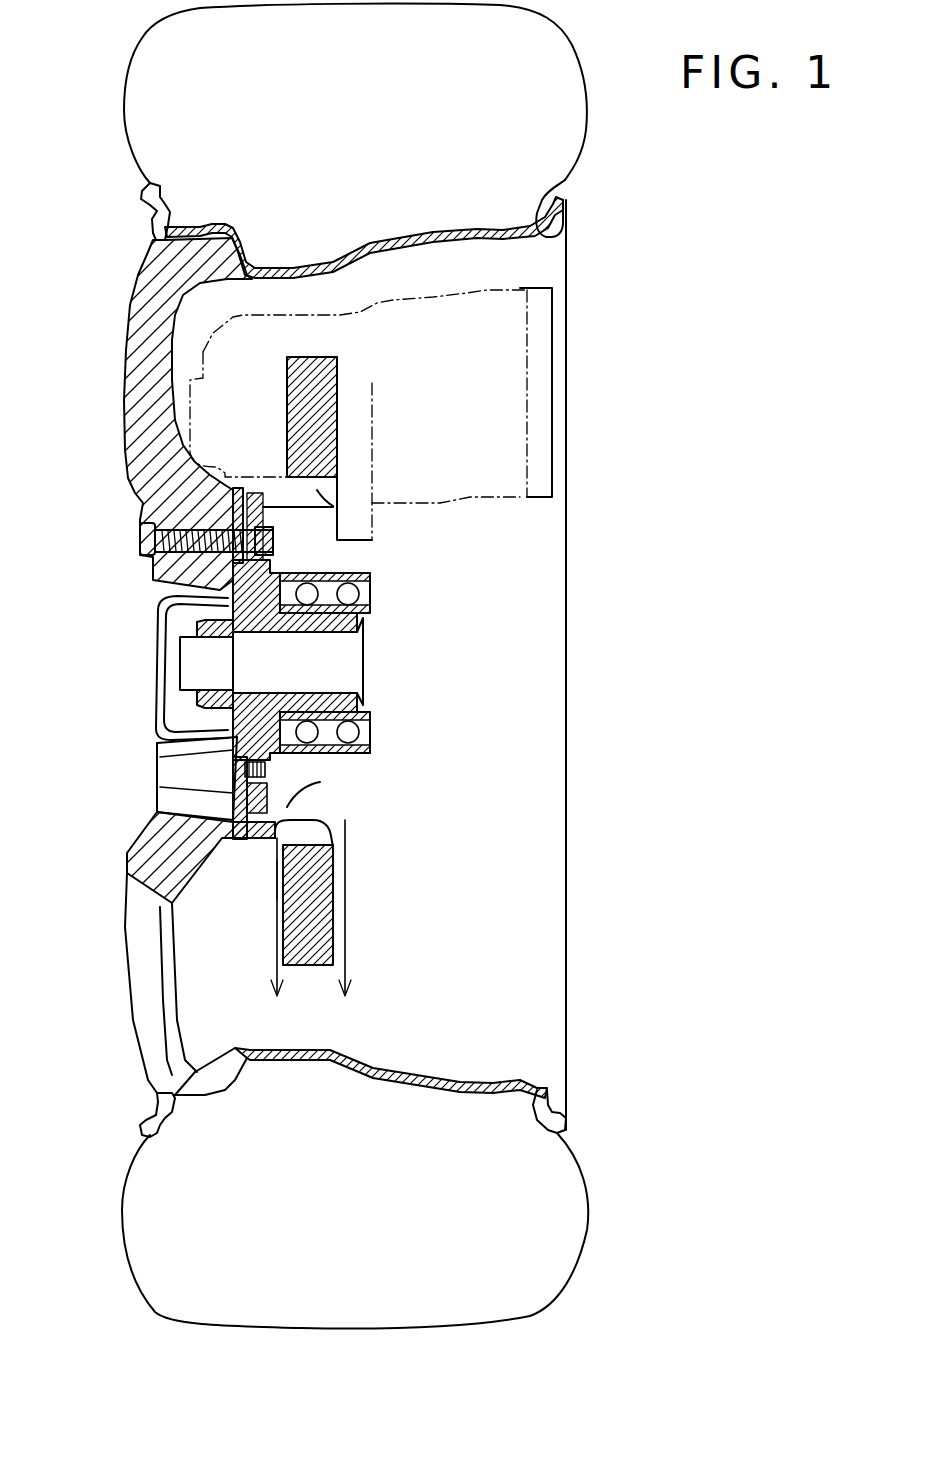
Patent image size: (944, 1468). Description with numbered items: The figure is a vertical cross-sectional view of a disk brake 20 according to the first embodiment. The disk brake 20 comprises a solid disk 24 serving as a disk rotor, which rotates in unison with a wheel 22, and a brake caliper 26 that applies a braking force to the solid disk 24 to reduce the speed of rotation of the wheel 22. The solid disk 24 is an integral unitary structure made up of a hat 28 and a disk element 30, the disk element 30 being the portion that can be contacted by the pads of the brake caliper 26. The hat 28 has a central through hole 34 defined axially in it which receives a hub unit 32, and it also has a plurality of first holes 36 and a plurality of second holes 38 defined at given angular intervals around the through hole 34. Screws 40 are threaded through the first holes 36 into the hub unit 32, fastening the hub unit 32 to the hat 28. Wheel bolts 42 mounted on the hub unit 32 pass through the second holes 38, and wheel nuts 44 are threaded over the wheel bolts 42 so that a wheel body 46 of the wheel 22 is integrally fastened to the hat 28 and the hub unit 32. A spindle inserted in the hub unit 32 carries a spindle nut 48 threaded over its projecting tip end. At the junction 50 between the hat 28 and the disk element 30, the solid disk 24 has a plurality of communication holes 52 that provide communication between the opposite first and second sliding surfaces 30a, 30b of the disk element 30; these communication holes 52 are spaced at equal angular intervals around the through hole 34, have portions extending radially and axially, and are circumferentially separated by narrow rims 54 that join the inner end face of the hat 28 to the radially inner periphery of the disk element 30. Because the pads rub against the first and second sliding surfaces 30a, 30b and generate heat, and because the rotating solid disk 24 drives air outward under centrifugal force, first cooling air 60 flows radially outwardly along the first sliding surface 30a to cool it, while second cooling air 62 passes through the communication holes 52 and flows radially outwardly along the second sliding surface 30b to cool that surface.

The disk brake 20 is at (60, 99).
The wheel 22 is at (118, 1185).
The solid disk 24 is at (243, 850).
The brake caliper 26 is at (490, 483).
The hat 28 is at (220, 793).
The disk element 30 is at (338, 385).
The first sliding surface 30a is at (333, 932).
The second sliding surface 30b is at (290, 910).
The hub unit 32 is at (370, 607).
The through hole 34 is at (248, 623).
The first holes 36 is at (265, 757).
The second holes 38 is at (318, 554).
The screws 40 is at (165, 748).
The wheel bolts 42 is at (153, 584).
The wheel nuts 44 is at (142, 540).
The wheel body 46 is at (132, 382).
The spindle nut 48 is at (207, 625).
The junction 50 is at (322, 812).
The communication holes 52 is at (330, 830).
The rims 54 is at (340, 507).
The first cooling air 60 is at (348, 886).
The second cooling air 62 is at (274, 876).